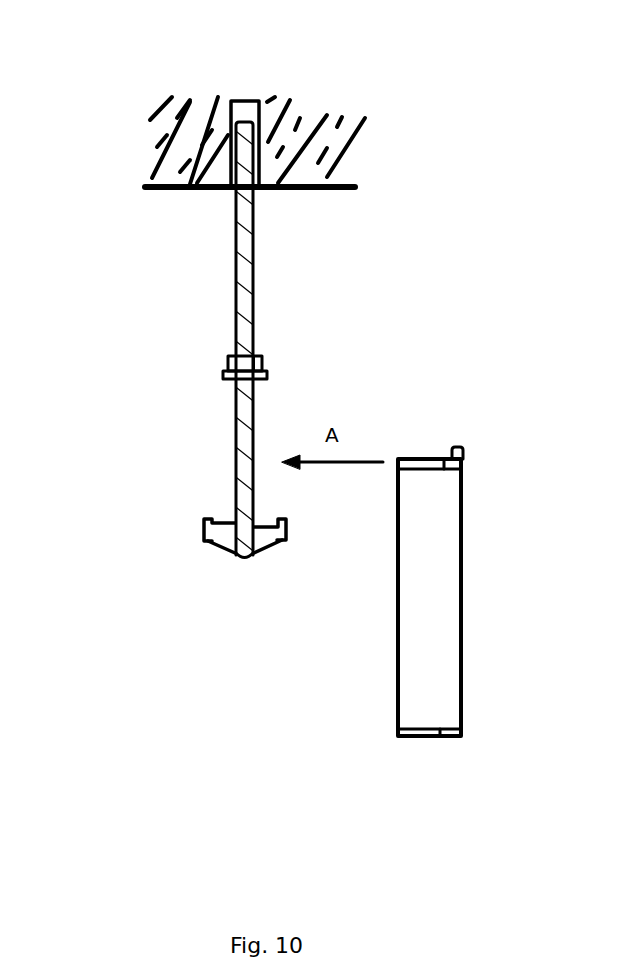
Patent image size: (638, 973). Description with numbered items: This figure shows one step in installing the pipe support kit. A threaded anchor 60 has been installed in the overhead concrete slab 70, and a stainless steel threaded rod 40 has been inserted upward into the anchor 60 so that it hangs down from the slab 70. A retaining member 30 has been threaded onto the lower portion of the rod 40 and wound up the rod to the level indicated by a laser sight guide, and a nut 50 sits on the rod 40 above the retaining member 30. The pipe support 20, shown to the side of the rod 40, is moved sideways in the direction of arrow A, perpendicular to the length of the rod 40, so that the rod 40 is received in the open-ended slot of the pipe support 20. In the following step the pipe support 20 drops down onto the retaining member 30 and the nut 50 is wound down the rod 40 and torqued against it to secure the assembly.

The pipe support 20 is at (463, 553).
The retaining member 30 is at (203, 522).
The threaded rod 40 is at (232, 253).
The nut 50 is at (225, 362).
The threaded anchor 60 is at (230, 122).
The overhead slab 70 is at (299, 100).